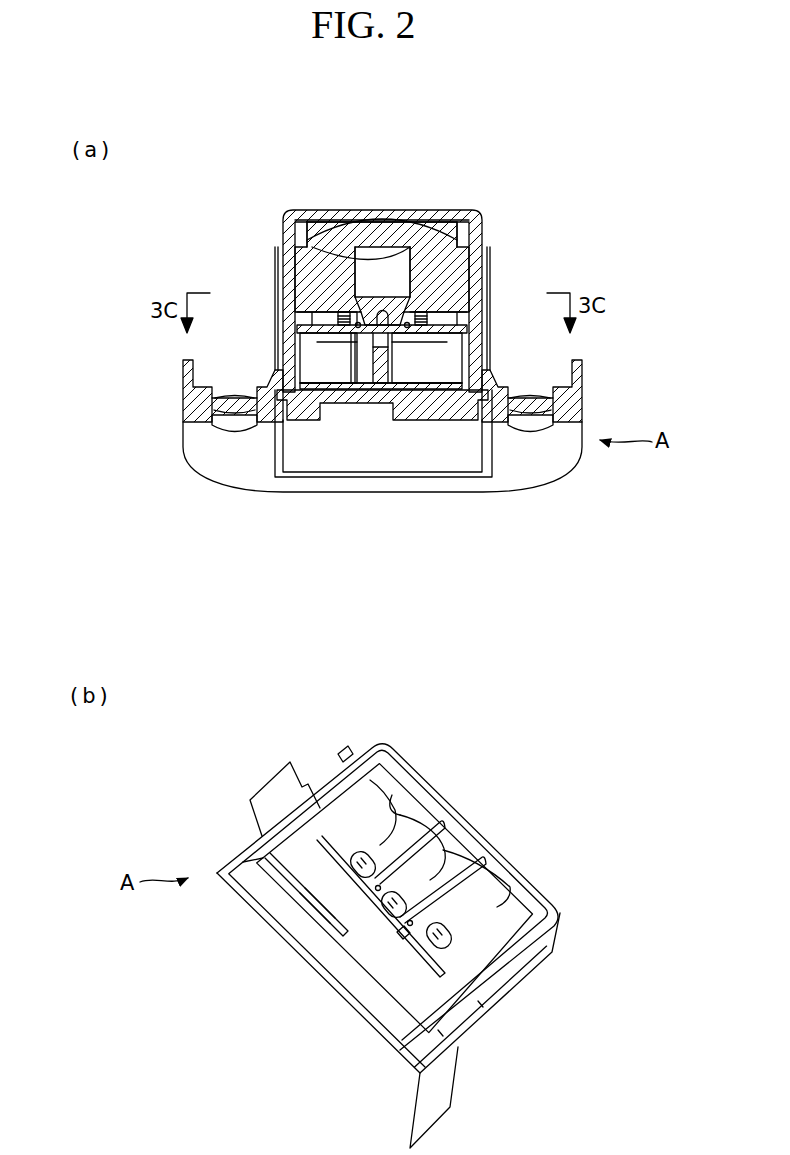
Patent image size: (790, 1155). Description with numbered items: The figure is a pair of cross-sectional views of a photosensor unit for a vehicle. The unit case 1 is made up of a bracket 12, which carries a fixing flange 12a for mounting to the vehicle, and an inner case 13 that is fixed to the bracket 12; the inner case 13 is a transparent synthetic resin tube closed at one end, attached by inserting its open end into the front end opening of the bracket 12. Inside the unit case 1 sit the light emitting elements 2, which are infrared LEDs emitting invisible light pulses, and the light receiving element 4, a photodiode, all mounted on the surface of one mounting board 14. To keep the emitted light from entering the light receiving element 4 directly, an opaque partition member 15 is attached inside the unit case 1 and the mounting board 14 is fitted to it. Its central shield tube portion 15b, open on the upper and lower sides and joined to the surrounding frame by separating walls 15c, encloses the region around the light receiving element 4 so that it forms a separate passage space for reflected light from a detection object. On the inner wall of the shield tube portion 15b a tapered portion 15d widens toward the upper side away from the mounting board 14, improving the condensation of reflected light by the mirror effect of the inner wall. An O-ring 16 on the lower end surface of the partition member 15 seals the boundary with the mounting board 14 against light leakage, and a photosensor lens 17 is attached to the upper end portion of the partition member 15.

The unit case 1 is at (215, 485).
The light emitting elements 2 is at (342, 312).
The light receiving element 4 is at (410, 243).
The bracket 12 is at (532, 972).
The fixing flange 12a is at (262, 798).
The inner case 13 is at (355, 217).
The mounting board 14 is at (480, 303).
The partition member 15 is at (317, 237).
The shield tube portion 15b is at (404, 815).
The separating walls 15c is at (382, 239).
The tapered portion 15d is at (387, 312).
The O-ring 16 is at (357, 325).
The photosensor lens 17 is at (420, 232).